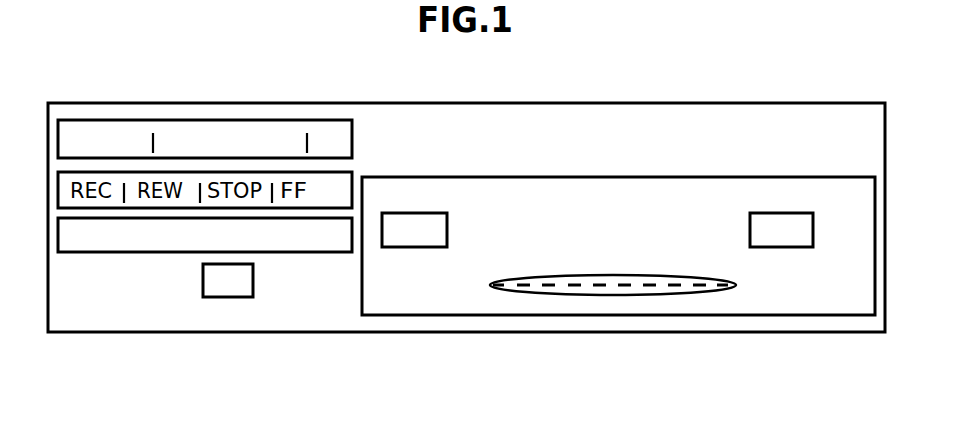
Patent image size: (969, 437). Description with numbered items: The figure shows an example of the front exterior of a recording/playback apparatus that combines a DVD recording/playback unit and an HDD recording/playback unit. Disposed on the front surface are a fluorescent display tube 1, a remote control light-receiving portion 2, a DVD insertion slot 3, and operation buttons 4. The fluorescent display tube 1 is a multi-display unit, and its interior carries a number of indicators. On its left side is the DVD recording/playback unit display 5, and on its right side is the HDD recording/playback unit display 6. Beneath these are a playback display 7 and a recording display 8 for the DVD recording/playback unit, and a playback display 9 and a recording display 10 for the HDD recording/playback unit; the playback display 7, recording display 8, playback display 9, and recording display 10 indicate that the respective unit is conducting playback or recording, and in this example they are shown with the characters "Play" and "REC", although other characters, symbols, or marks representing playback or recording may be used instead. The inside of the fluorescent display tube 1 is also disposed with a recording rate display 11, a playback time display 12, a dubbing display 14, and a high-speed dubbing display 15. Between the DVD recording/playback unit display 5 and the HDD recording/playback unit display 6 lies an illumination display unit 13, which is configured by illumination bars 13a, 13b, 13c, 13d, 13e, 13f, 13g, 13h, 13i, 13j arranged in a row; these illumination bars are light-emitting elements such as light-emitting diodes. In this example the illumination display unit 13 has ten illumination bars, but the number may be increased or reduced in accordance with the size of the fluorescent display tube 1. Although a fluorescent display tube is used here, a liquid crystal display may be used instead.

The fluorescent display tube 1 is at (840, 200).
The remote control light-receiving portion 2 is at (217, 287).
The DVD insertion slot 3 is at (177, 238).
The operation buttons 4 is at (250, 128).
The DVD recording/playback unit display 5 is at (405, 213).
The HDD recording/playback unit display 6 is at (773, 213).
The playback display for the DVD recording/playback unit 7 is at (370, 283).
The recording display for the DVD recording/playback unit 8 is at (432, 290).
The playback display for the HDD recording/playback unit 9 is at (768, 293).
The recording display for the HDD recording/playback unit 10 is at (822, 290).
The recording rate display 11 is at (735, 187).
The playback time display 12 is at (683, 245).
The illumination display unit 13 is at (602, 275).
The illumination bar 13a is at (500, 290).
The illumination bar 13b is at (525, 290).
The illumination bar 13c is at (550, 290).
The illumination bar 13d is at (575, 290).
The illumination bar 13e is at (599, 290).
The illumination bar 13f is at (623, 290).
The illumination bar 13g is at (650, 290).
The illumination bar 13h is at (673, 290).
The illumination bar 13i is at (700, 290).
The illumination bar 13j is at (724, 290).
The dubbing display 14 is at (643, 185).
The high-speed dubbing display 15 is at (485, 187).